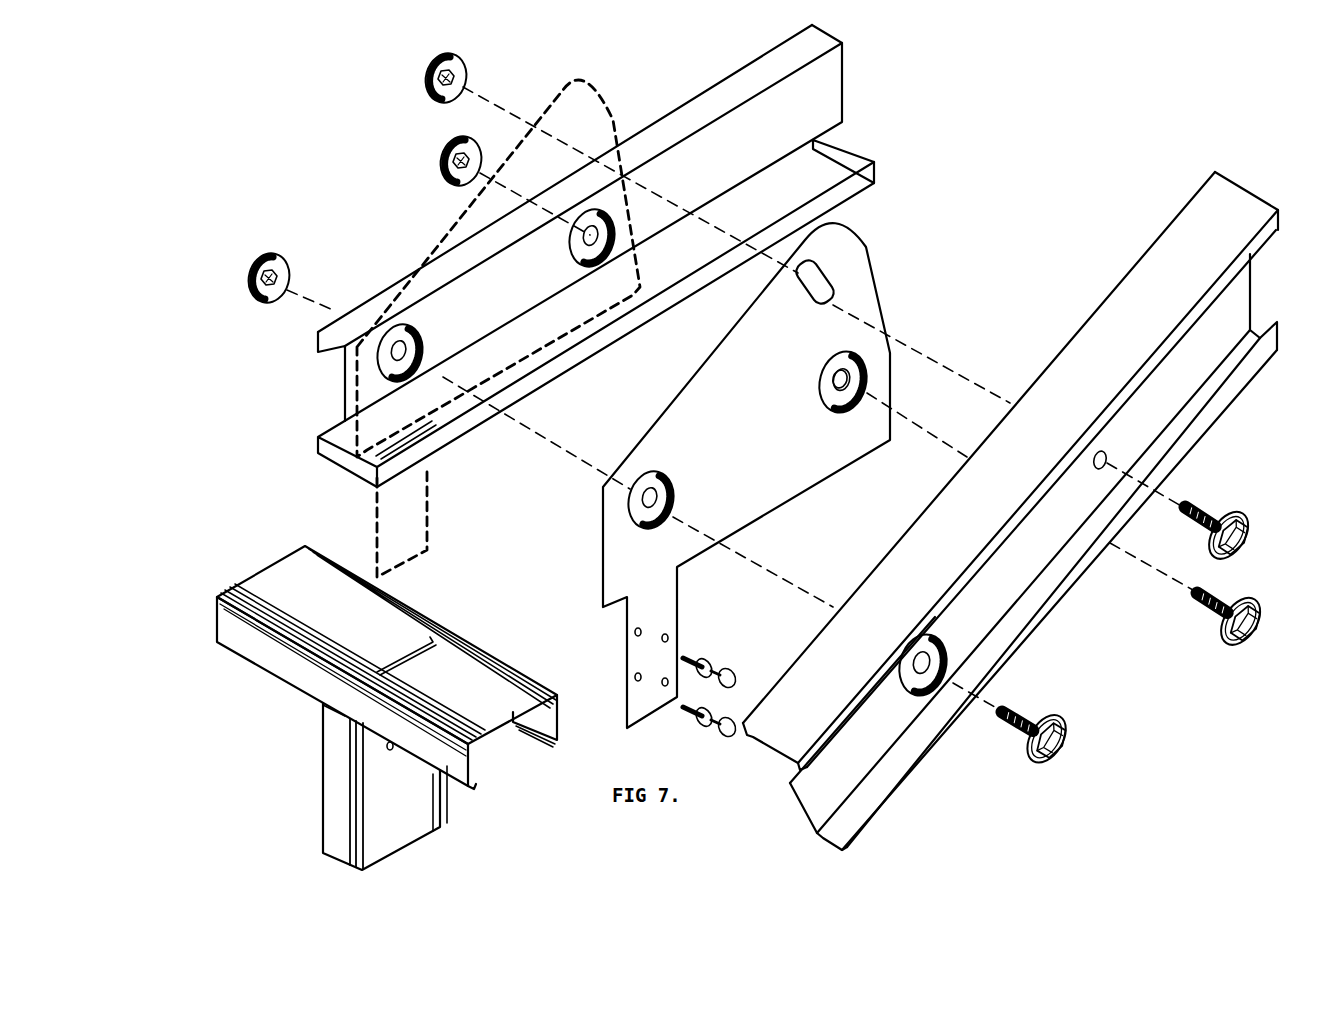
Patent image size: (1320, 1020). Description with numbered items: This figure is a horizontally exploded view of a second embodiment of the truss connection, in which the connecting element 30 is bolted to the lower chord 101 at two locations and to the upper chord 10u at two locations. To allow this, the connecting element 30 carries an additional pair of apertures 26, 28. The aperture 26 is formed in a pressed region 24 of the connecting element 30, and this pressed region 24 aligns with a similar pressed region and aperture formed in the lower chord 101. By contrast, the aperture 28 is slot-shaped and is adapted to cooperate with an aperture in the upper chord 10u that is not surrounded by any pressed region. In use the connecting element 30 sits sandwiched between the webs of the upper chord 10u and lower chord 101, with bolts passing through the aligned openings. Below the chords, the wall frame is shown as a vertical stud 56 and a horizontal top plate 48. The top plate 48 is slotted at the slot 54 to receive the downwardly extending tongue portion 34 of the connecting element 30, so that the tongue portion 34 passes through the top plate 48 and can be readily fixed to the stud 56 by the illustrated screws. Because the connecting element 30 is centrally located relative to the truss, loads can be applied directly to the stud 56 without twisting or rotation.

The lower chord 101 is at (622, 256).
The upper chord 10u is at (1010, 495).
The aperture 28 is at (854, 269).
The pressed region 24 is at (877, 356).
The aperture 26 is at (799, 383).
The connecting element 30 is at (744, 475).
The tongue portion 34 is at (607, 657).
The top plate 48 is at (373, 667).
The slot 54 is at (427, 637).
The vertical stud 56 is at (385, 810).